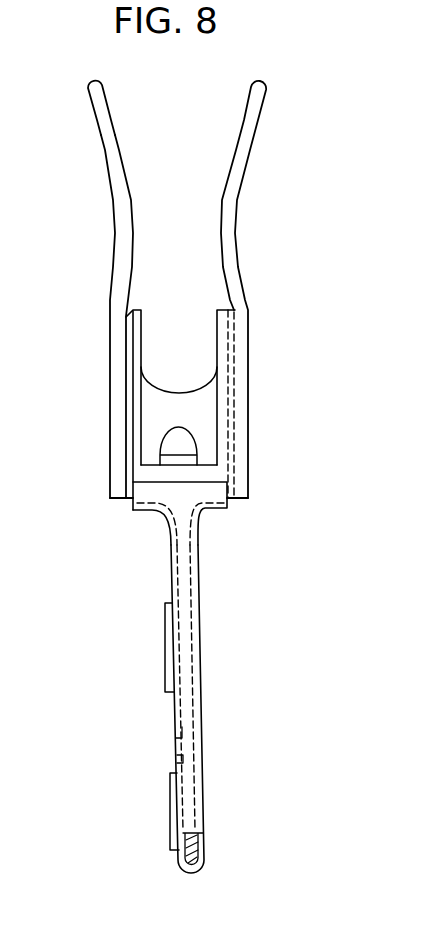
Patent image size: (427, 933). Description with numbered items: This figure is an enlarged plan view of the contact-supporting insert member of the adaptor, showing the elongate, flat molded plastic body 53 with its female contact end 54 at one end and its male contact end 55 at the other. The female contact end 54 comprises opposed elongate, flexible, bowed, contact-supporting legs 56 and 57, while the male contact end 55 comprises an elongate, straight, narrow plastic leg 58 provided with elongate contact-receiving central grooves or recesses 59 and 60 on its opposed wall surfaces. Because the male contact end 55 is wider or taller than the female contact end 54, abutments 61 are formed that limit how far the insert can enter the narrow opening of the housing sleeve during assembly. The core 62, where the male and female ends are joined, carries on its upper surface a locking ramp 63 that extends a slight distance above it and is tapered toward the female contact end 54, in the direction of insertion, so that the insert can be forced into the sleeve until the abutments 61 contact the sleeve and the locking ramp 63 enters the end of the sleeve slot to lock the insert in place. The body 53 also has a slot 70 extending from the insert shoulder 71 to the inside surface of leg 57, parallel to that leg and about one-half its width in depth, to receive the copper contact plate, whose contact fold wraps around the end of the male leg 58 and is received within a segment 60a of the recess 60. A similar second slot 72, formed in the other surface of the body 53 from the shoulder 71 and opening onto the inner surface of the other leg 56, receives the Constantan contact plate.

The molded plastic body 53 is at (186, 427).
The female contact end 54 is at (75, 289).
The male contact end 55 is at (207, 709).
The contact-supporting leg 56 is at (93, 107).
The contact-supporting leg 57 is at (259, 116).
The plastic leg 58 is at (200, 685).
The contact-receiving groove 59 is at (190, 582).
The contact-receiving groove 60 is at (175, 582).
The recess segment 60a is at (178, 760).
The abutment 61 is at (156, 481).
The core 62 is at (210, 472).
The locking ramp 63 is at (173, 447).
The slot 70 is at (235, 432).
The insert shoulder 71 is at (122, 500).
The second slot 72 is at (125, 376).